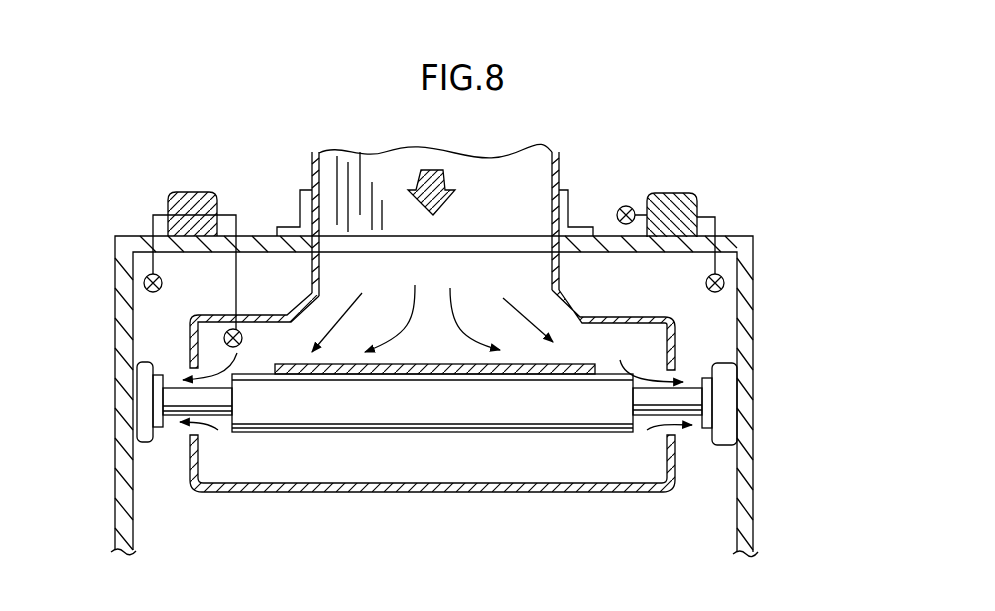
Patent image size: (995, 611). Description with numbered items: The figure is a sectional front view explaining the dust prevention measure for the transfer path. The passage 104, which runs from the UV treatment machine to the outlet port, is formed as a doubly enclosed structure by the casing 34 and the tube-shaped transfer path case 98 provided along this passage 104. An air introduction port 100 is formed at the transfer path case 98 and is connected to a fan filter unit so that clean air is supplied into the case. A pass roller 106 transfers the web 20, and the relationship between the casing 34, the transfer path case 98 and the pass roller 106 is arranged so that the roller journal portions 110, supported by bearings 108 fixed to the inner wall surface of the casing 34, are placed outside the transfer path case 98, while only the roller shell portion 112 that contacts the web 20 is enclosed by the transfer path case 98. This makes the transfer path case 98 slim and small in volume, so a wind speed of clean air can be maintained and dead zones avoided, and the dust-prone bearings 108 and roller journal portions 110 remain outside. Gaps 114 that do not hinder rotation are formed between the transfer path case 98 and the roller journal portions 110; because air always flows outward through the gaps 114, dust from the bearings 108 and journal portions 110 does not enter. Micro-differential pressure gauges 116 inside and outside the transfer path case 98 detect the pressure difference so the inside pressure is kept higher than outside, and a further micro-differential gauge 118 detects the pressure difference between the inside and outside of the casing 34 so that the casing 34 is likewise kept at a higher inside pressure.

The web 20 is at (512, 370).
The casing 34 is at (743, 293).
The transfer path case 98 is at (443, 497).
The air introduction port 100 is at (517, 187).
The passage 104 is at (273, 453).
The pass roller 106 is at (540, 398).
The bearings 108 is at (143, 405).
The roller journal portions 110 is at (180, 402).
The roller shell portion 112 is at (323, 407).
The gaps 114 is at (182, 384).
The micro-differential pressure gauges 116 is at (197, 192).
The micro-differential gauge 118 is at (678, 208).